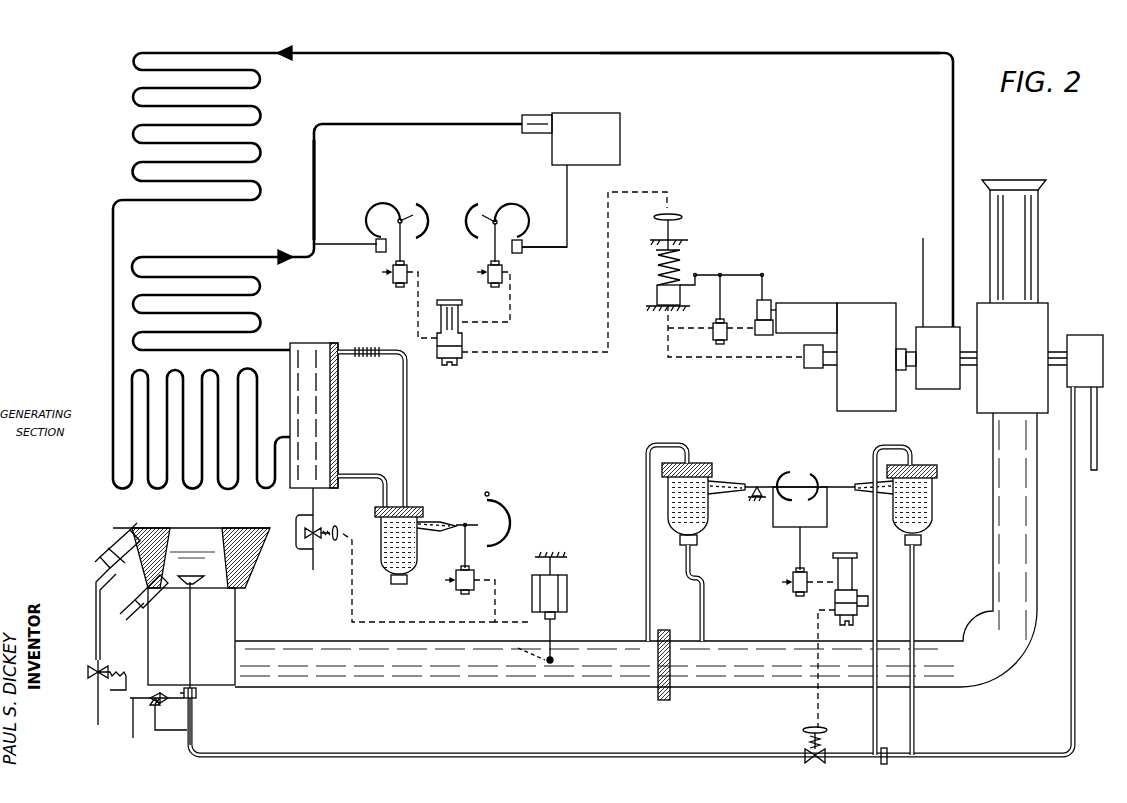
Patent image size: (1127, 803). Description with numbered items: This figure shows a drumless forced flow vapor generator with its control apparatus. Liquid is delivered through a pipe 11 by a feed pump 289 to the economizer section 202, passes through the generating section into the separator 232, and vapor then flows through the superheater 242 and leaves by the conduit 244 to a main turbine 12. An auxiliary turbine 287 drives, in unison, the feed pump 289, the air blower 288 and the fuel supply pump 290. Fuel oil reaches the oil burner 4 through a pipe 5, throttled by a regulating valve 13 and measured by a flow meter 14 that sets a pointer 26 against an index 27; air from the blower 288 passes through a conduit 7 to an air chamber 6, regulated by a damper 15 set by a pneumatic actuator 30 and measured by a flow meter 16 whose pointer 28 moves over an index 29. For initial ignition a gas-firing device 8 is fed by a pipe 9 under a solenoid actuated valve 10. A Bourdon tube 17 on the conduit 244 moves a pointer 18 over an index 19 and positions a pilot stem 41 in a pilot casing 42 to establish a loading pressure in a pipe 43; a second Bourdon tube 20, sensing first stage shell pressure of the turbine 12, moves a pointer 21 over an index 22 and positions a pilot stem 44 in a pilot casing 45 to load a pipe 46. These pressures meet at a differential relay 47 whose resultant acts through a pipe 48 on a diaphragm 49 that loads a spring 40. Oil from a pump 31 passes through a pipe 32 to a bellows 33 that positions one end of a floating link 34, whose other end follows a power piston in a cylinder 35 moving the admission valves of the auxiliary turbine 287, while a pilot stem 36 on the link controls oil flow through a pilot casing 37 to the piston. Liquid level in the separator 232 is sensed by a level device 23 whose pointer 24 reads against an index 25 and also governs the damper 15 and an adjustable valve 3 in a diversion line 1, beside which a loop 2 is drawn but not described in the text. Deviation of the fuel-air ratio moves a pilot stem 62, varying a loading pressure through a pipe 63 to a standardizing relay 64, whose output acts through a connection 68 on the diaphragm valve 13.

The diversion line 1 is at (310, 556).
The bypass loop 2 is at (296, 516).
The adjustable valve 3 is at (317, 524).
The oil burner 4 is at (192, 640).
The pipe 5 is at (282, 752).
The air chamber 6 is at (236, 604).
The conduit 7 is at (338, 640).
The gas-firing device 8 is at (102, 554).
The pipe 9 is at (90, 622).
The solenoid actuated valve 10 is at (88, 672).
The pipe 11 is at (798, 58).
The main turbine 12 is at (622, 126).
The regulating valve 13 is at (818, 765).
The flow meter 14 is at (934, 494).
The damper 15 is at (536, 672).
The flow meter 16 is at (698, 463).
The Bourdon tube 17 is at (380, 206).
The indicator pointer 18 is at (406, 214).
The index 19 is at (428, 223).
The Bourdon tube 20 is at (534, 224).
The indicator pointer 21 is at (493, 216).
The index 22 is at (470, 214).
The liquid level responsive means 23 is at (414, 508).
The pointer 24 is at (448, 500).
The index 25 is at (494, 526).
The pointer 26 is at (822, 486).
The index 27 is at (817, 472).
The pointer 28 is at (772, 472).
The index 29 is at (788, 470).
The pneumatic actuator 30 is at (563, 606).
The pump 31 is at (808, 370).
The pipe 32 is at (740, 358).
The expansible metallic bellows 33 is at (656, 296).
The floating link 34 is at (698, 272).
The cylinder 35 is at (760, 336).
The pilot stem 36 is at (723, 288).
The pilot casing 37 is at (714, 334).
The spring 40 is at (657, 270).
The pilot stem 41 is at (404, 244).
The pilot casing 42 is at (394, 283).
The pipe 43 is at (418, 306).
The pilot stem 44 is at (493, 246).
The pilot casing 45 is at (491, 283).
The pipe 46 is at (510, 312).
The differential relay 47 is at (463, 338).
The pipe 48 is at (586, 362).
The diaphragm 49 is at (670, 212).
The pilot stem 62 is at (796, 552).
The pipe 63 is at (810, 570).
The standardizing relay 64 is at (851, 570).
The connection 68 is at (804, 712).
The economizer section 202 is at (485, 267).
The separator 232 is at (338, 416).
The superheater 242 is at (261, 237).
The conduit 244 is at (316, 170).
The auxiliary turbine 287 is at (840, 412).
The air blower 288 is at (978, 414).
The liquid feed pump 289 is at (918, 389).
The fuel supply pump 290 is at (1068, 336).